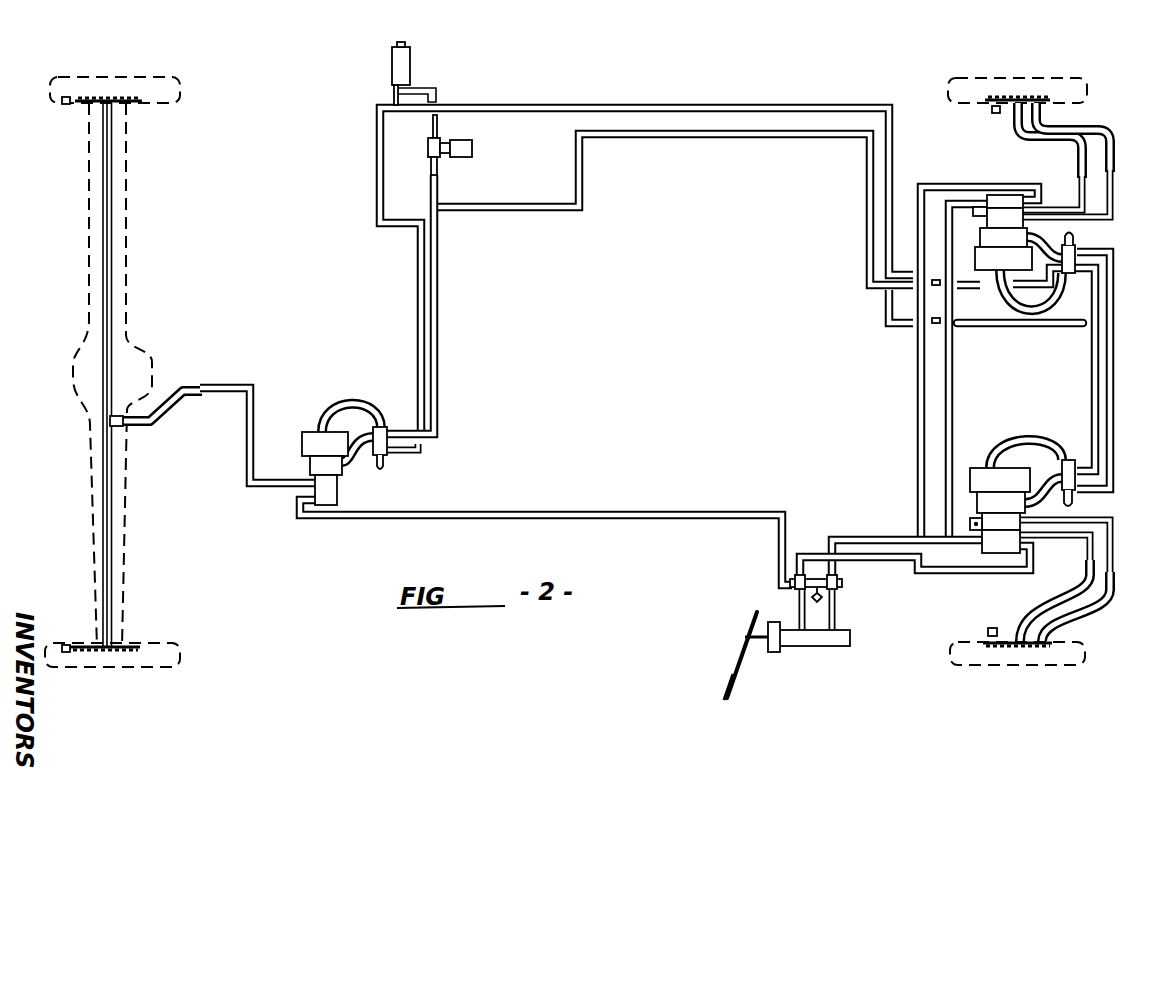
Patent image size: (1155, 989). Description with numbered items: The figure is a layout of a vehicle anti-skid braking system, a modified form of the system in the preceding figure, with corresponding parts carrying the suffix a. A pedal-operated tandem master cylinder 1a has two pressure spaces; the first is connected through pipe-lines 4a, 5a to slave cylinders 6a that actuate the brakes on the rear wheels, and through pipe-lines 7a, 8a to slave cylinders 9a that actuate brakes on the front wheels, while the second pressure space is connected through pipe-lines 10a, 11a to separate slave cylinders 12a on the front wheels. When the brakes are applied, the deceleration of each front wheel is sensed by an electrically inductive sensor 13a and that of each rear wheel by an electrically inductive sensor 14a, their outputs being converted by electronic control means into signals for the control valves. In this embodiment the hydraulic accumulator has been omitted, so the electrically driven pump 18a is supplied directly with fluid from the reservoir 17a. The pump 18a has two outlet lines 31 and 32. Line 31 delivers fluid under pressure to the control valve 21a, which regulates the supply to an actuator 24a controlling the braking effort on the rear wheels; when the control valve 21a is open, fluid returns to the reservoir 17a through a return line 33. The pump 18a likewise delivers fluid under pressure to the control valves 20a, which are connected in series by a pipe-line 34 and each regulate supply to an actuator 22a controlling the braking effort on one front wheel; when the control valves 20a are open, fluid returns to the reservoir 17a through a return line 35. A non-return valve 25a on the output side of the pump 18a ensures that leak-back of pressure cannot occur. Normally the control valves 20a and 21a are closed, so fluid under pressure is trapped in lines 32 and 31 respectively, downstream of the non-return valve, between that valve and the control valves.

The pedal-operated tandem master cylinder 1a is at (818, 636).
The pipe-line 4a is at (573, 512).
The pipe-line 5a is at (248, 442).
The slave cylinders 6a is at (137, 105).
The pipe-line 7a is at (870, 562).
The pipe-line 8a is at (918, 390).
The slave cylinders 9a is at (1017, 645).
The pipe-line 10a is at (851, 535).
The pipe-line 11a is at (947, 385).
The separate slave cylinders 12a is at (1047, 643).
The electrically inductive sensor 13a is at (990, 117).
The electrically inductive sensor 14a is at (65, 105).
The reservoir 17a is at (395, 61).
The electrically driven pump 18a is at (466, 148).
The control valves 20a is at (1070, 263).
The control valve 21a is at (386, 438).
The actuator 22a is at (993, 263).
The actuator 24a is at (317, 442).
The non-return valve 25a is at (436, 173).
The outlet line 31 is at (440, 326).
The outlet line 32 is at (700, 133).
The return line 33 is at (419, 316).
The pipe-line 34 is at (1093, 360).
The return line 35 is at (895, 323).